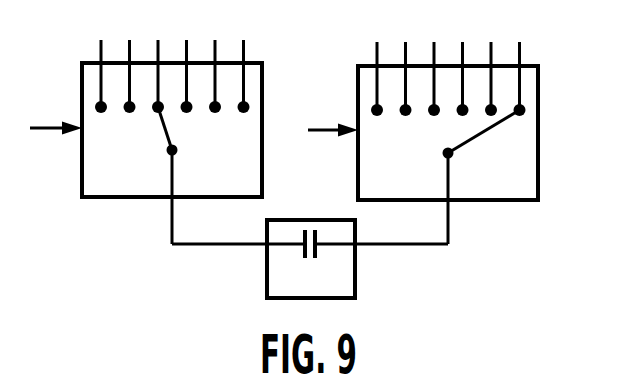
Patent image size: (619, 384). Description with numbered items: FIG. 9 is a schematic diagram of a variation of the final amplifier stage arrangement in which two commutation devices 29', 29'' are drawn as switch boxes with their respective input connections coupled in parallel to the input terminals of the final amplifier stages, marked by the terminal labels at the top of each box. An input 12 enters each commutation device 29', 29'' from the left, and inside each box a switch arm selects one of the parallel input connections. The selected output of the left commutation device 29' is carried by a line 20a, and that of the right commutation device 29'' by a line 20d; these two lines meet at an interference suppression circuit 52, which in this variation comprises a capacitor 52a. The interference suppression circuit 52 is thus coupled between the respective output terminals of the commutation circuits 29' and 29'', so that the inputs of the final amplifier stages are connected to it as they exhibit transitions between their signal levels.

The input signal 12 is at (194, 117).
The commutation device 29' is at (164, 137).
The commutation device 29'' is at (474, 141).
The first connection line 20a is at (172, 244).
The second connection line 20d is at (447, 244).
The interference suppression circuit 52 is at (267, 282).
The capacitor 52a is at (318, 252).